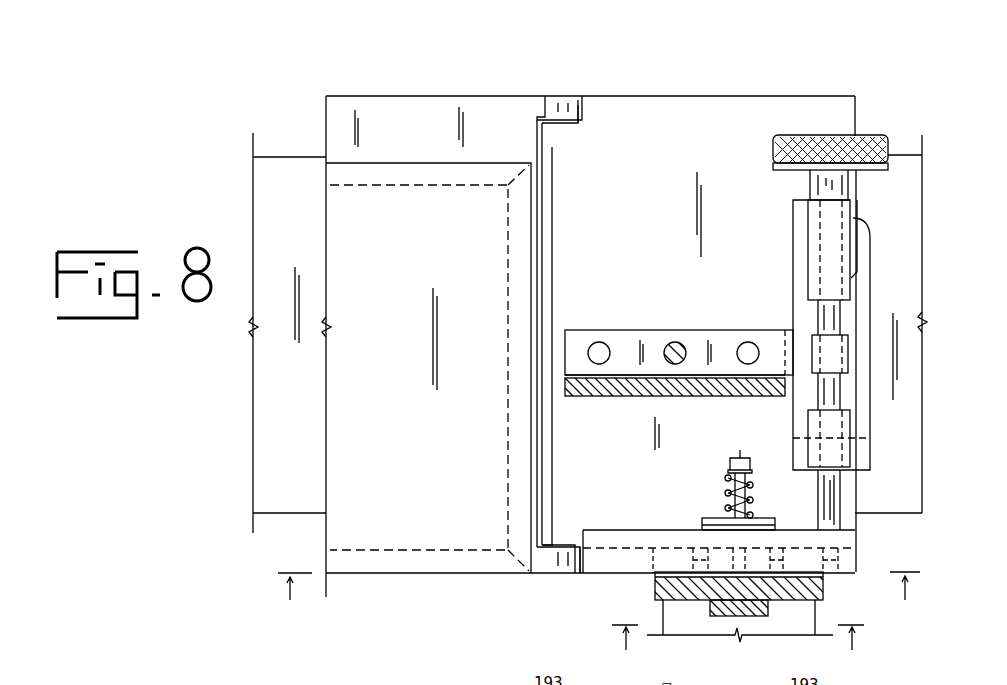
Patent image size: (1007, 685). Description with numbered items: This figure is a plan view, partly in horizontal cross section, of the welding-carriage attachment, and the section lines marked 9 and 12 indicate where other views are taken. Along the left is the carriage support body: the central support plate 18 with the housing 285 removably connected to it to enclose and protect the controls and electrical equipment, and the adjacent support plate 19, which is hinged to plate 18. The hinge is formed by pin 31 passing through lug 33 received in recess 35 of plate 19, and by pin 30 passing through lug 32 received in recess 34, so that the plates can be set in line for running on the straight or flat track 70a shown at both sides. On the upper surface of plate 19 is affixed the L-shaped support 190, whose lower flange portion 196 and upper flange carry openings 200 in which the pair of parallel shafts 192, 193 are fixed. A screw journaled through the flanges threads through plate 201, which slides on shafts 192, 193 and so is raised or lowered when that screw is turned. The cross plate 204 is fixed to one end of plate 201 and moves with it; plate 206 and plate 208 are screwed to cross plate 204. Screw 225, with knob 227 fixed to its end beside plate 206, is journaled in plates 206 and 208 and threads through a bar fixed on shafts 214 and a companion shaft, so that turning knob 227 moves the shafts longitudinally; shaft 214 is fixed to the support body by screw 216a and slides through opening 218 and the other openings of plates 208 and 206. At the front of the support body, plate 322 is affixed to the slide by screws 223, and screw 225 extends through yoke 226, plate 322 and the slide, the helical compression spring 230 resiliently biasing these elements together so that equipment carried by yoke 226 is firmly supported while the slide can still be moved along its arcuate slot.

The support plate 18 is at (395, 96).
The support plate 19 is at (710, 95).
The straight or flat track 70a is at (297, 212).
The housing 285 is at (435, 452).
The recess 35 is at (537, 120).
The lug 33 is at (566, 100).
The pin 31 is at (578, 124).
The lug 32 is at (560, 573).
The recess 34 is at (553, 551).
The pin 30 is at (579, 545).
The shaft 192 is at (750, 347).
The lower flange portion 196 is at (719, 328).
The shaft 193 is at (610, 350).
The support 190 is at (612, 397).
The openings 200 is at (599, 343).
The plate 201 is at (680, 330).
The knob 227 is at (773, 153).
The cross plate 204 is at (793, 232).
The plate 206 is at (852, 215).
The shaft 214 is at (843, 497).
The plate 208 is at (848, 425).
The opening 218 is at (615, 550).
The screw 216a is at (856, 545).
The plate 322 is at (824, 586).
The screws 223 is at (660, 598).
The yoke 226 is at (758, 633).
The screw 225 is at (740, 457).
The helical compression spring 230 is at (725, 490).
The section line 9 is at (599, 597).
The section line 12 is at (738, 648).